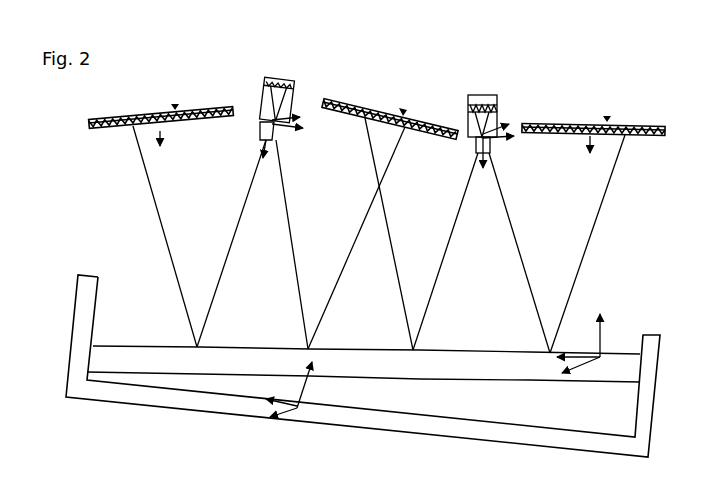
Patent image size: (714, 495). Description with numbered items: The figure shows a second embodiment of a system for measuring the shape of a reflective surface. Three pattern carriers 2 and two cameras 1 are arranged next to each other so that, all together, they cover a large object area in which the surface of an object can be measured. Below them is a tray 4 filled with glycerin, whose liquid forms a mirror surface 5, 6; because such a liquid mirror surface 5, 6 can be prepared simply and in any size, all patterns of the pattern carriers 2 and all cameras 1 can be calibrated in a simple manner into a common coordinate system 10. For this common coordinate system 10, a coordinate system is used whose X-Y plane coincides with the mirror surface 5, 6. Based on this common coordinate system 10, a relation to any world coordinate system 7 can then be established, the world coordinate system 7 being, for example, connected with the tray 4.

The camera 1 is at (466, 134).
The pattern carrier 2 is at (555, 122).
The tray 4 is at (650, 355).
The mirror surface 5 is at (122, 341).
The mirror surface 6 is at (108, 366).
The world coordinate system 7 is at (297, 408).
The common coordinate system 10 is at (592, 348).